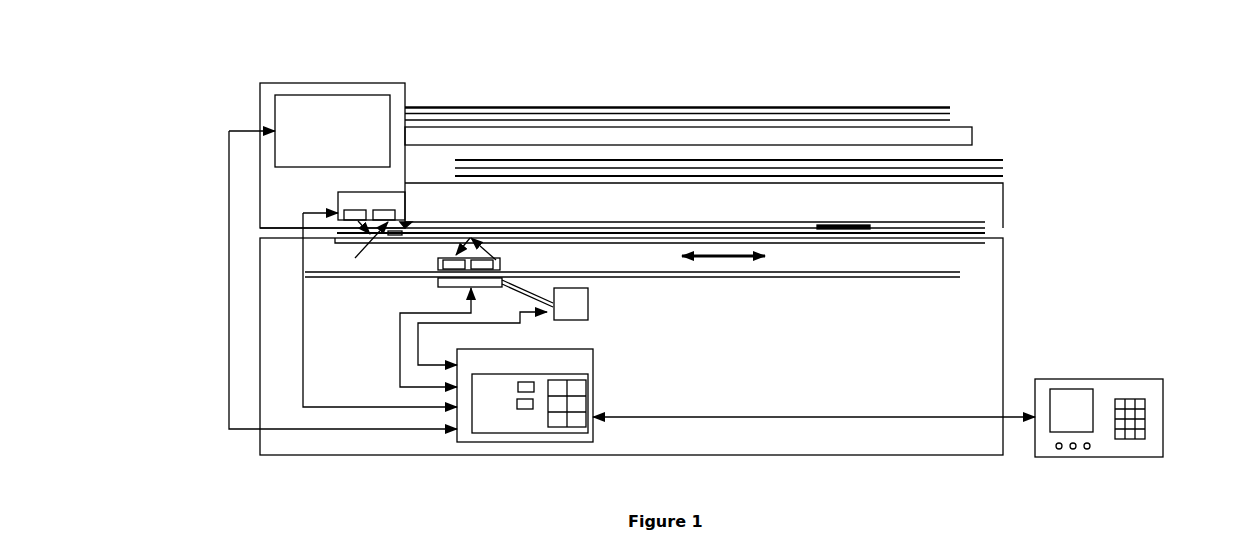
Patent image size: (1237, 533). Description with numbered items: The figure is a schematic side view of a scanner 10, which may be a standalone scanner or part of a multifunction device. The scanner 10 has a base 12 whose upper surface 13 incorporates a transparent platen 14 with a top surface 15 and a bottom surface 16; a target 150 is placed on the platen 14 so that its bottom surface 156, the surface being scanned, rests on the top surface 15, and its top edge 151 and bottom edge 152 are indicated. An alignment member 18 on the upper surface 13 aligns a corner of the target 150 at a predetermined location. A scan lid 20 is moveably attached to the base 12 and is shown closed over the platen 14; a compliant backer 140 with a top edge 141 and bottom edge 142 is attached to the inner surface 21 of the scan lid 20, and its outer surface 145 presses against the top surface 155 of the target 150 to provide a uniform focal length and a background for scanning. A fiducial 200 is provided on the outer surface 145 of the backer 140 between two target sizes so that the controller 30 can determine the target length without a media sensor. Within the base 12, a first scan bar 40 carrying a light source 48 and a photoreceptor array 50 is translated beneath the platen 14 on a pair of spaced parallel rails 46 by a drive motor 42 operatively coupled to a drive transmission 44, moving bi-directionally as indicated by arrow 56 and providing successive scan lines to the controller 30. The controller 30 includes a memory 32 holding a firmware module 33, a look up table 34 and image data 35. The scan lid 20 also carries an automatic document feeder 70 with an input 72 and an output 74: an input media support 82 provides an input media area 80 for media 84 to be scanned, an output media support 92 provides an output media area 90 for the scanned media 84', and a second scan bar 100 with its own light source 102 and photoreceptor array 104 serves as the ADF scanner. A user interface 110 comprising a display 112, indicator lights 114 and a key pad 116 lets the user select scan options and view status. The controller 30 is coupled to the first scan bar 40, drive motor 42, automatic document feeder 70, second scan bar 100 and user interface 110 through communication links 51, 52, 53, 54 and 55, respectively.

The scanner 10 is at (1068, 118).
The base 12 is at (1003, 345).
The upper surface 13 is at (988, 237).
The platen 14 is at (988, 241).
The top surface 15 is at (975, 231).
The bottom surface 16 is at (952, 244).
The alignment member 18 is at (363, 245).
The scan lid 20 is at (235, 78).
The inner surface 21 is at (277, 227).
The controller 30 is at (490, 349).
The memory 32 is at (593, 404).
The firmware module 33 is at (518, 386).
The look up table 34 is at (572, 383).
The image data 35 is at (526, 409).
The first scan bar 40 is at (438, 283).
The drive motor 42 is at (588, 302).
The drive transmission 44 is at (540, 292).
The rails 46 is at (835, 275).
The light source 48 is at (497, 260).
The photoreceptor array 50 is at (440, 262).
The communication link 51 is at (400, 330).
The communication link 52 is at (418, 328).
The communication link 53 is at (229, 195).
The communication link 54 is at (303, 300).
The communication link 55 is at (775, 417).
The arrow 56 is at (718, 258).
The automatic document feeder 70 is at (275, 115).
The input 72 is at (405, 105).
The output 74 is at (405, 222).
The input media area 80 is at (597, 102).
The input media support 82 is at (972, 135).
The media 84 is at (677, 96).
The scanned media 84' is at (1034, 160).
The output media area 90 is at (985, 152).
The output media support 92 is at (985, 230).
The second scan bar 100 is at (356, 192).
The light source 102 is at (355, 212).
The photoreceptor array 104 is at (383, 210).
The user interface 110 is at (1100, 379).
The display 112 is at (1075, 389).
The indicator lights 114 is at (1089, 449).
The key pad 116 is at (1145, 415).
The backer 140 is at (730, 222).
The top edge 141 is at (410, 222).
The bottom edge 142 is at (985, 230).
The outer surface 145 is at (598, 222).
The target 150 is at (895, 225).
The top edge 151 is at (405, 228).
The bottom edge 152 is at (960, 200).
The top surface 155 is at (780, 222).
The bottom surface 156 is at (835, 236).
The fiducial 200 is at (845, 225).